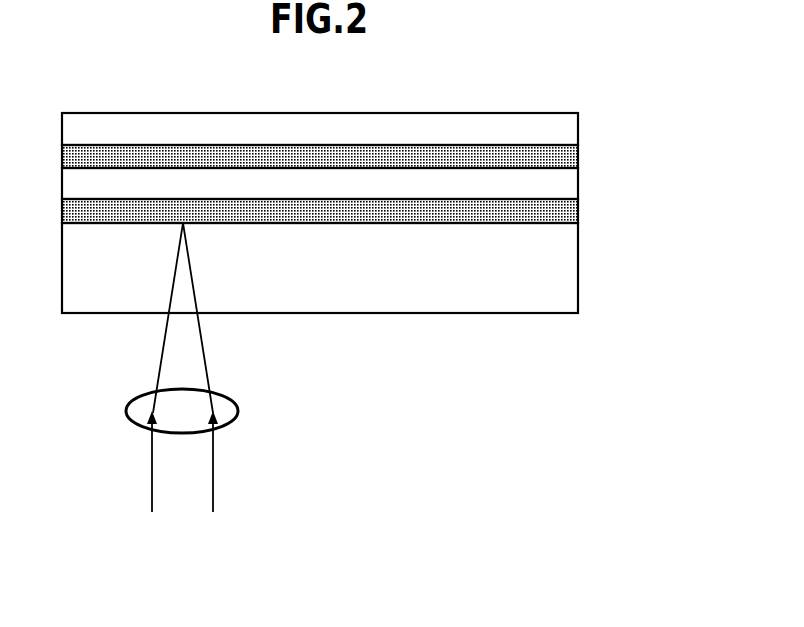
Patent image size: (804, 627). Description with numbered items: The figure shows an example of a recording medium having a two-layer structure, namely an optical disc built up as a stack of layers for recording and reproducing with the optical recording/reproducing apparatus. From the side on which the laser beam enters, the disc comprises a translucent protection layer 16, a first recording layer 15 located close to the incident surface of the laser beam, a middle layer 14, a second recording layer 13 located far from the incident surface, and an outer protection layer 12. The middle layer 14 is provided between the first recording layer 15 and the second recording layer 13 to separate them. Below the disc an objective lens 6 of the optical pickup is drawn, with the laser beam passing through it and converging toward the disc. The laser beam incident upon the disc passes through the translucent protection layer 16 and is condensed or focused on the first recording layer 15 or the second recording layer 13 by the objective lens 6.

The protection layer 12 is at (564, 127).
The second recording layer 13 is at (564, 158).
The middle layer 14 is at (564, 192).
The first recording layer 15 is at (564, 218).
The translucent protection layer 16 is at (564, 267).
The objective lens 6 is at (236, 420).